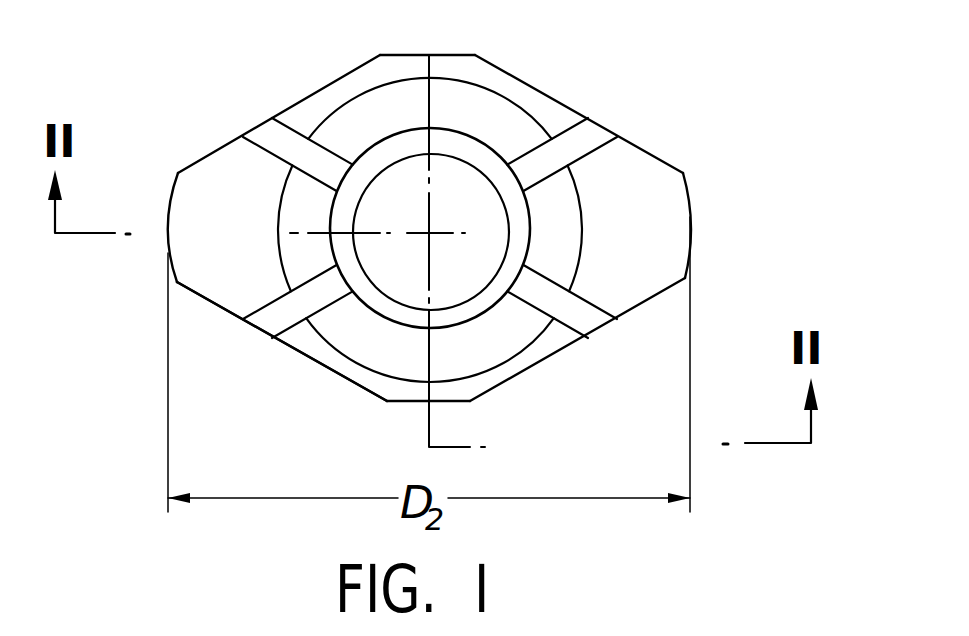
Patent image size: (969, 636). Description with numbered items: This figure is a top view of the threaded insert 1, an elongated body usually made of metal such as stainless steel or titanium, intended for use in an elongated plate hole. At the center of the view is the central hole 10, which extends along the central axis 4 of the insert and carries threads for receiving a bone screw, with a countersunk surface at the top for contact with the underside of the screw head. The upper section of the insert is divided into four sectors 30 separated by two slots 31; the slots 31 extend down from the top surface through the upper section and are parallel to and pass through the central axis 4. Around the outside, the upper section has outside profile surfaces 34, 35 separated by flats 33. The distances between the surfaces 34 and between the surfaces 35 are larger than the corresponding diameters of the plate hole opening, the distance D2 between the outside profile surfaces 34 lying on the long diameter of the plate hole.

The insert 1 is at (718, 133).
The central axis 4 is at (430, 233).
The central hole 10 is at (478, 138).
The sectors 30 is at (397, 70).
The slots 31 is at (258, 137).
The flats 33 is at (306, 371).
The outside profile surfaces 34 is at (692, 222).
The outside profile surfaces 35 is at (446, 56).